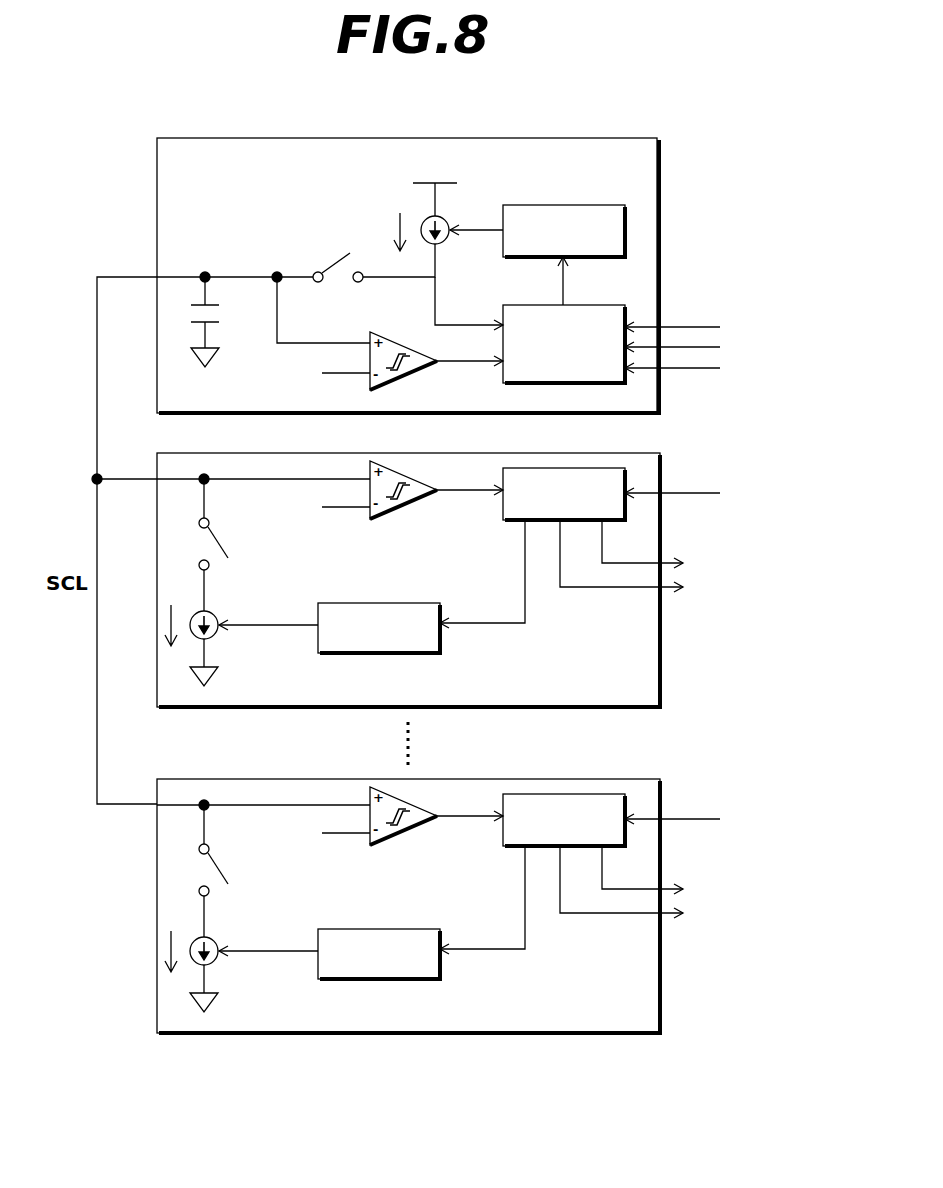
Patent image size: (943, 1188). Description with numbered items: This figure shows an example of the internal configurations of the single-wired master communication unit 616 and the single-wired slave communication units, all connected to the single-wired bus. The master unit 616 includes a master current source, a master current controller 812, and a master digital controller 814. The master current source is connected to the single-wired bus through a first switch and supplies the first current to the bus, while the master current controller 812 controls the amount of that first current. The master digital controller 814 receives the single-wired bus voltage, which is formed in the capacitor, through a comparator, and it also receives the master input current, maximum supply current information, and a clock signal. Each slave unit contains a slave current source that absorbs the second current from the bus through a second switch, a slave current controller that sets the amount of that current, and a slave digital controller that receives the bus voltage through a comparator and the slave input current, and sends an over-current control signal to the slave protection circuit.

The single-wired master communication unit 616 is at (663, 180).
The master current controller 812 is at (564, 231).
The master digital controller 814 is at (564, 344).